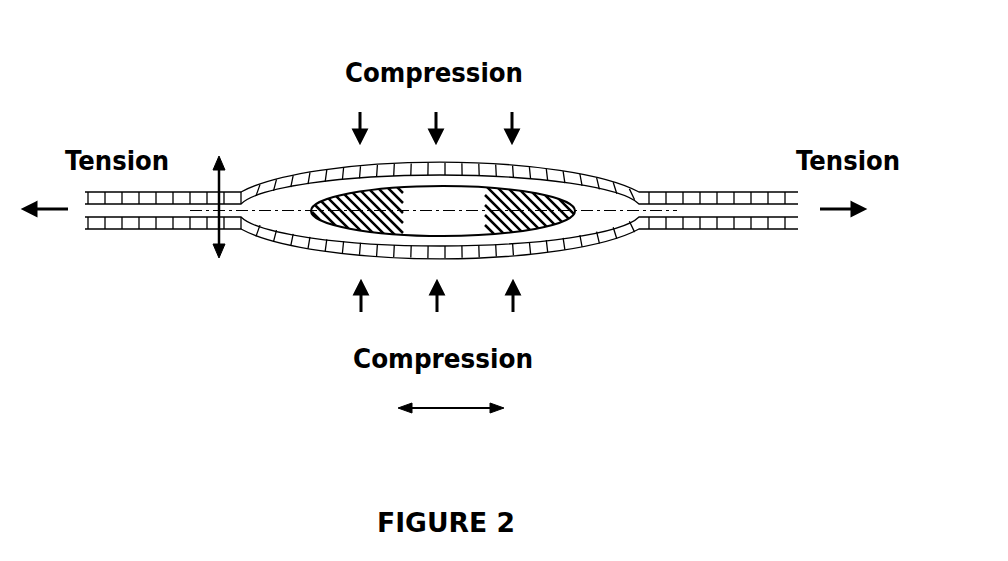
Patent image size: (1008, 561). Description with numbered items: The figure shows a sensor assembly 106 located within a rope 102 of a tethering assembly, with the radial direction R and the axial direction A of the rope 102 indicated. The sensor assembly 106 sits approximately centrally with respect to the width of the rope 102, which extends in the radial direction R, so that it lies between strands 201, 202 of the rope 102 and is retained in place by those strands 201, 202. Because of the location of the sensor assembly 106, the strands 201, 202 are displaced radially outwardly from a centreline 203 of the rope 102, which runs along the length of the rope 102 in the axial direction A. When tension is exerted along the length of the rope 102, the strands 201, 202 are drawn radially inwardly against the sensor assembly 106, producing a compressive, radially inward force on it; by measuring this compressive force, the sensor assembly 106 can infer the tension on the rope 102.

The rope 102 is at (441, 185).
The strand 201 is at (668, 196).
The strand 202 is at (668, 226).
The centreline 203 is at (300, 214).
The sensor assembly 106 is at (443, 210).
The radial direction R is at (220, 186).
The axial direction A is at (460, 412).